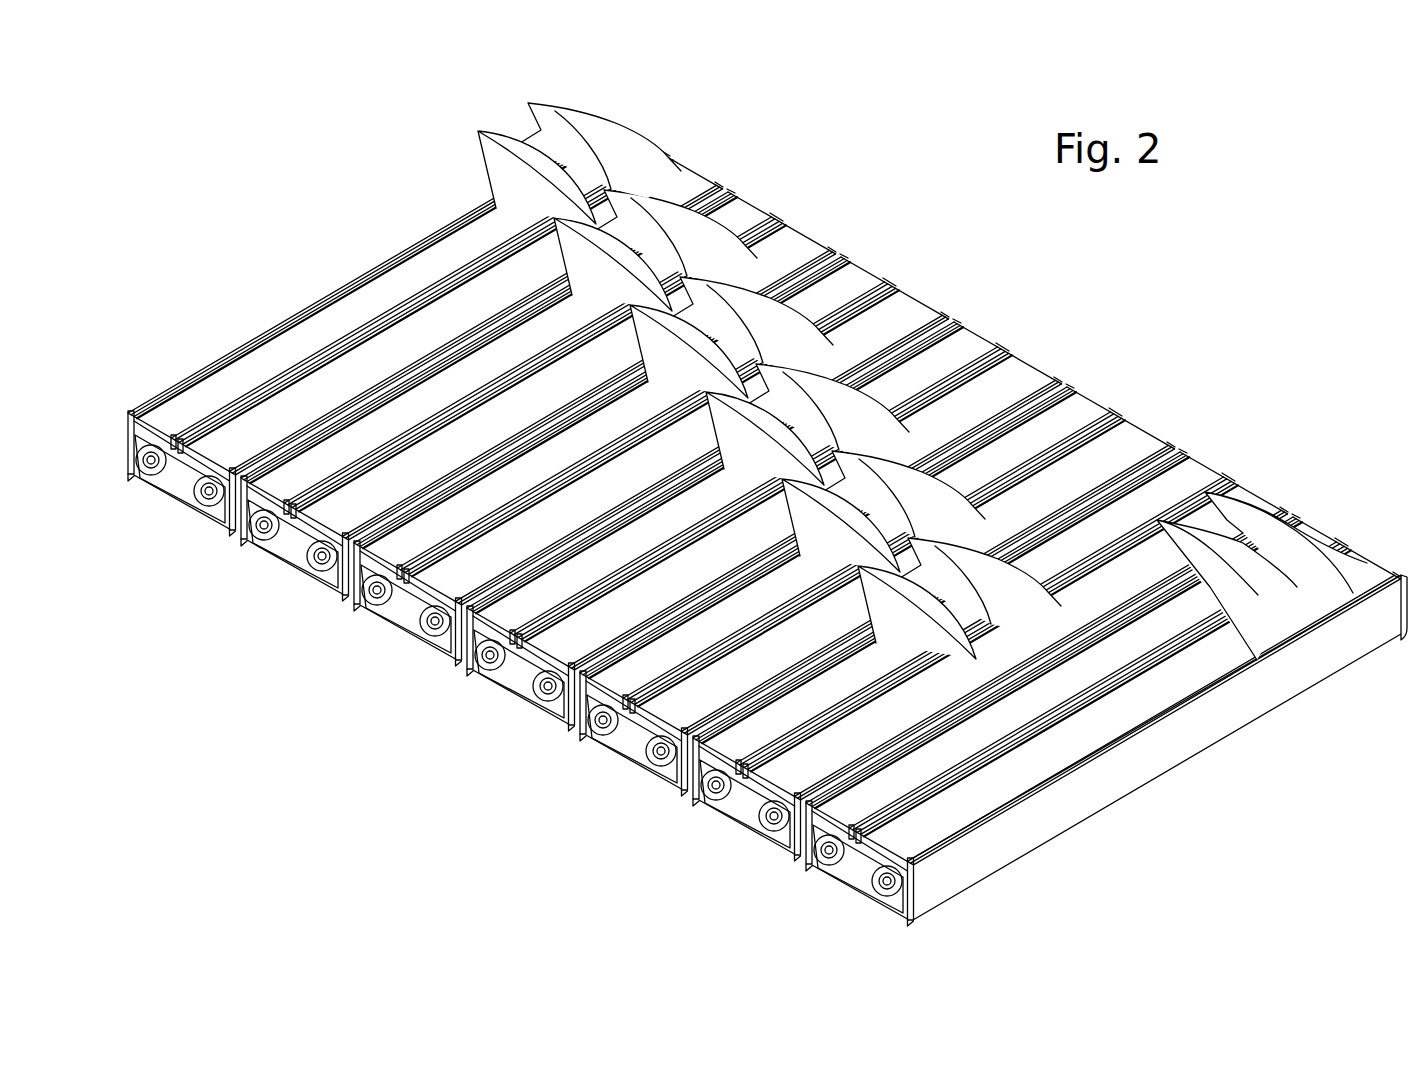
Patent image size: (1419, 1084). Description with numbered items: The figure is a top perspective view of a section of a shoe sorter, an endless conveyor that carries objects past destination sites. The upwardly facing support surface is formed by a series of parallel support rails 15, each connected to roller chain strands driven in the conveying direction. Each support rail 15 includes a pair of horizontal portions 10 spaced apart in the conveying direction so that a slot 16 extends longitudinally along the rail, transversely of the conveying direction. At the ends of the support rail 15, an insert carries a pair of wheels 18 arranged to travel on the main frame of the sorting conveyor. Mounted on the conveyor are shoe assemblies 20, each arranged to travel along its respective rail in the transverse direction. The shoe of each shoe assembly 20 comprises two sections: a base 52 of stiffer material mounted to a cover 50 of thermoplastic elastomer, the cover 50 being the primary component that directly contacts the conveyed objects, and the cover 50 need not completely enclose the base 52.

The horizontal portions 10 is at (410, 330).
The slot 16 is at (425, 299).
The wheels 18 is at (161, 481).
The support rail 15 is at (309, 580).
The shoe assembly 20 is at (939, 370).
The cover 50 is at (1315, 538).
The base 52 is at (588, 160).